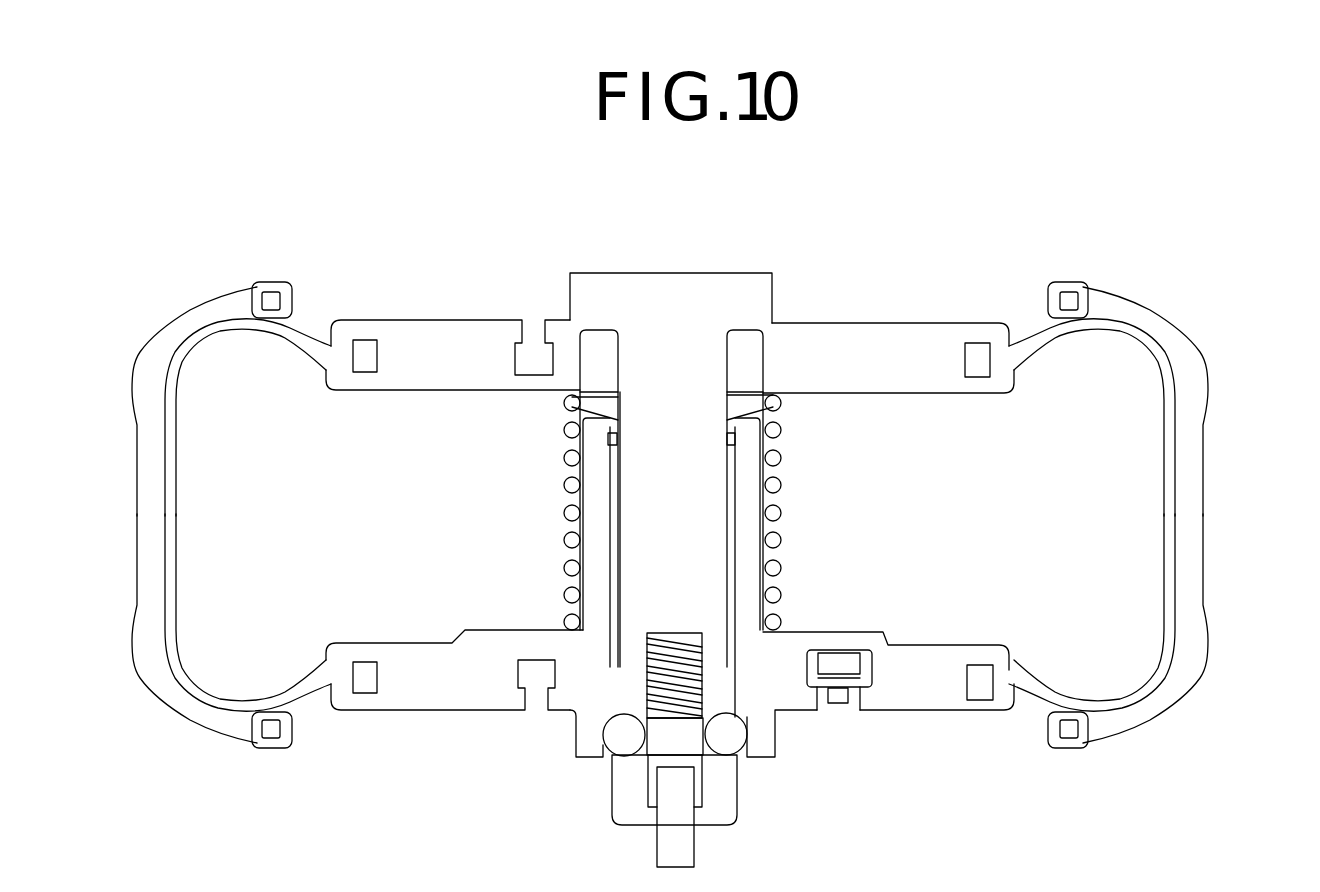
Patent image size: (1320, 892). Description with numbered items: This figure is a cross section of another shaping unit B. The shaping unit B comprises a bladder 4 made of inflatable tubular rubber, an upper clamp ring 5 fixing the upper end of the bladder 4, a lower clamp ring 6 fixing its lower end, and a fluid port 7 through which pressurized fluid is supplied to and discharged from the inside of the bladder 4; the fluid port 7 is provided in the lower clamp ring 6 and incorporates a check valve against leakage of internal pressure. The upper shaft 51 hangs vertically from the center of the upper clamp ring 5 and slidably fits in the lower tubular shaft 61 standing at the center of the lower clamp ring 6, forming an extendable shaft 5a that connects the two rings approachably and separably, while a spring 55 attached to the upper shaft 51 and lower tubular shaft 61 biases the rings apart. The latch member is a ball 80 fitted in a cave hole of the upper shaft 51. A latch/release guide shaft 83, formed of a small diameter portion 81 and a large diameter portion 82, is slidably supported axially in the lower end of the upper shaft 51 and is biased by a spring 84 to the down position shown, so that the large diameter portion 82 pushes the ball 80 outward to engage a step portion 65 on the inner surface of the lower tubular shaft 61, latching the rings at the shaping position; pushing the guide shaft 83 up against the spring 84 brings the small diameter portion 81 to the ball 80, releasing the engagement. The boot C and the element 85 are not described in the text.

The shaping unit B is at (1168, 257).
The boot / cover C is at (1202, 536).
The bladder 4 is at (1158, 447).
The upper clamp ring 5 is at (880, 345).
The extendable shaft 5a is at (866, 484).
The lower clamp ring 6 is at (405, 695).
The fluid port 7 is at (872, 648).
The upper shaft 51 is at (680, 486).
The spring 55 is at (565, 458).
The lower tubular shaft 61 is at (750, 538).
The step portion 65 is at (742, 716).
The ball 80 is at (627, 743).
The small diameter portion 81 is at (672, 818).
The large diameter portion 82 is at (668, 740).
The latch/release guide shaft 83 is at (862, 763).
The spring 84 is at (647, 640).
The ball 85 is at (603, 730).